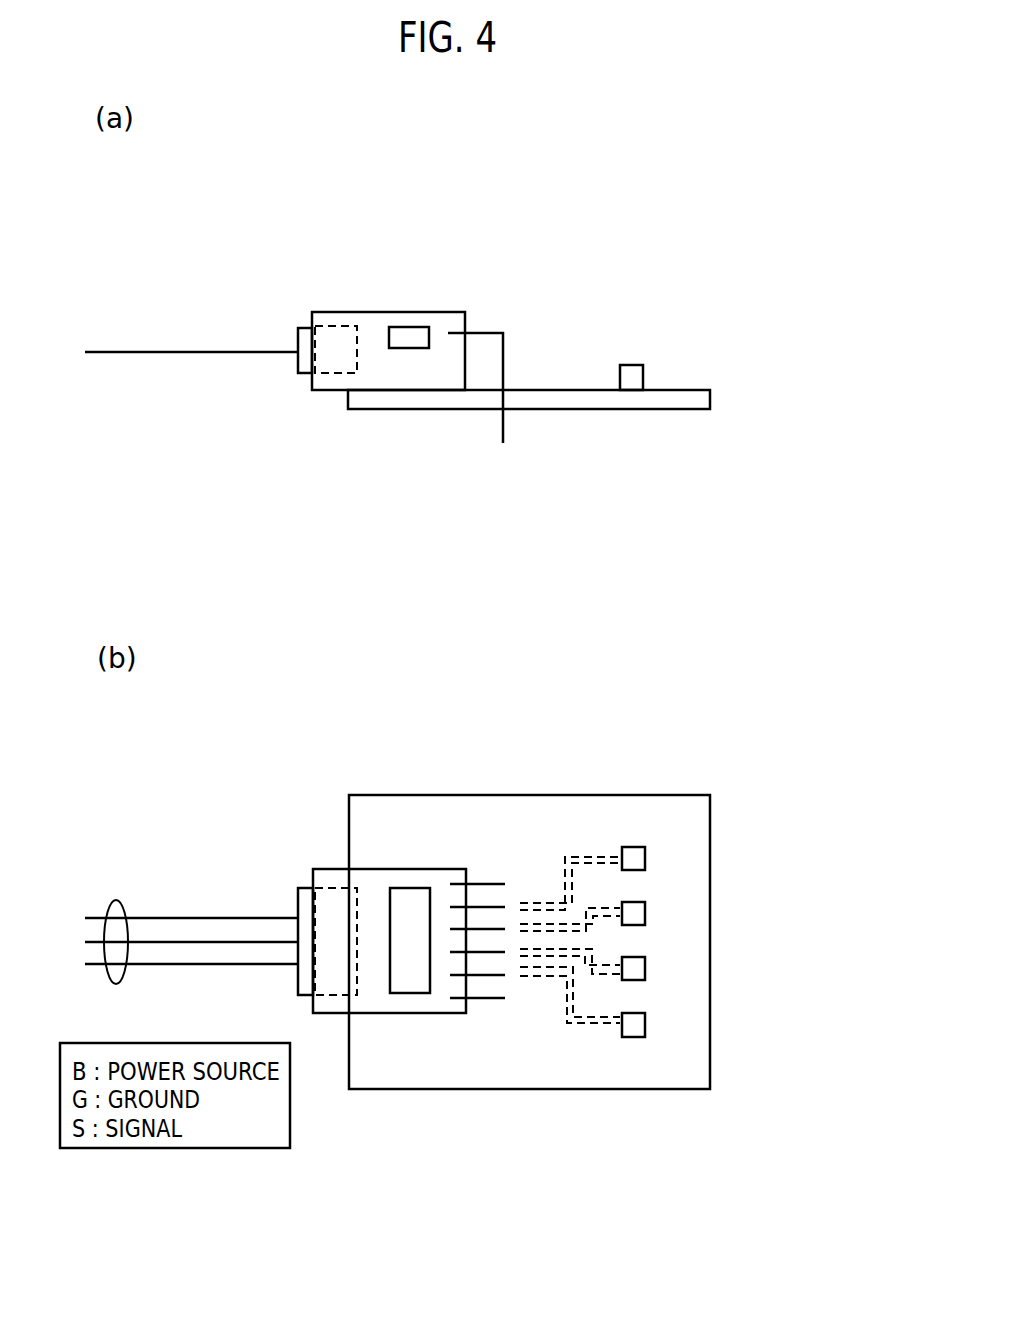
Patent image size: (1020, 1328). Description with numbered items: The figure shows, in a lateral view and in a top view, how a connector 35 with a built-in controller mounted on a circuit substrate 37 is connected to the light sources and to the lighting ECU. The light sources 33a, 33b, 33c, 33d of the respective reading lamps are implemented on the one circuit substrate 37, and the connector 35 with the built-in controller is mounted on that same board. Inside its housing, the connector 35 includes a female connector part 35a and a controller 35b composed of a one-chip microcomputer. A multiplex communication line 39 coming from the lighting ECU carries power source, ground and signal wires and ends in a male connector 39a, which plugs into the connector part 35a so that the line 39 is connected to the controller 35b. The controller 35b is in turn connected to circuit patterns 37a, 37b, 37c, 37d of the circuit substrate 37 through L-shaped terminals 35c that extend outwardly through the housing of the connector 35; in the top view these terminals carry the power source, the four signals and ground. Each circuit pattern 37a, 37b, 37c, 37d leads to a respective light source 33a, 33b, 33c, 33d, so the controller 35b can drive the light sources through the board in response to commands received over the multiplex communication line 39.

The light source 33a is at (627, 365).
The light source 33b is at (645, 913).
The light source 33c is at (645, 968).
The light source 33d is at (645, 1023).
The connector with a built-in controller 35 is at (392, 312).
The connector part 35a is at (358, 350).
The controller 35b is at (413, 333).
The L-shaped terminals 35c is at (483, 333).
The circuit substrate 37 is at (683, 398).
The circuit pattern 37a is at (588, 857).
The circuit pattern 37b is at (598, 918).
The circuit pattern 37c is at (598, 980).
The circuit pattern 37d is at (580, 1025).
The multiplex communication line 39 is at (152, 352).
The male connector 39a is at (302, 328).